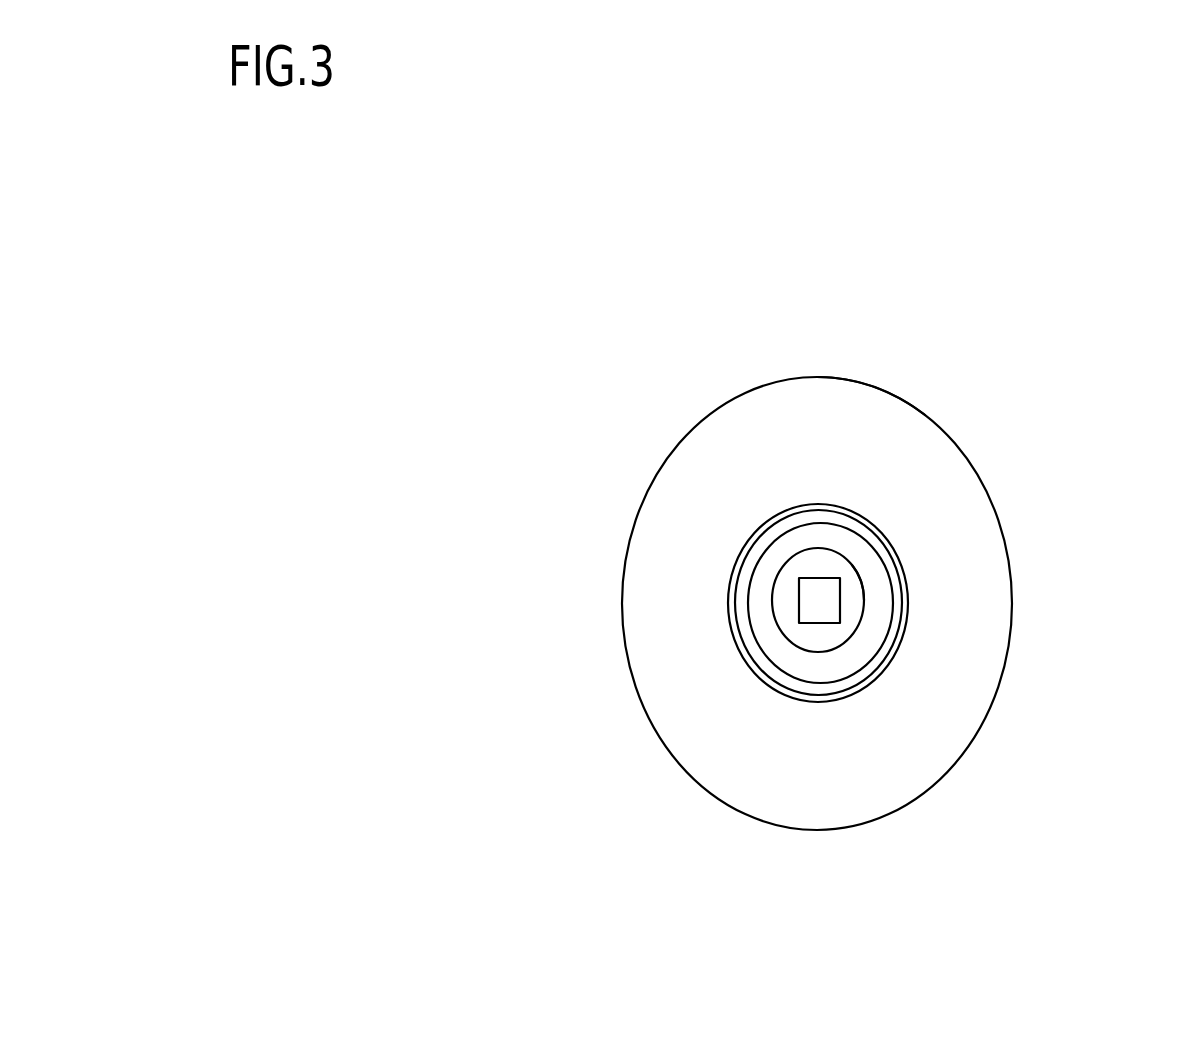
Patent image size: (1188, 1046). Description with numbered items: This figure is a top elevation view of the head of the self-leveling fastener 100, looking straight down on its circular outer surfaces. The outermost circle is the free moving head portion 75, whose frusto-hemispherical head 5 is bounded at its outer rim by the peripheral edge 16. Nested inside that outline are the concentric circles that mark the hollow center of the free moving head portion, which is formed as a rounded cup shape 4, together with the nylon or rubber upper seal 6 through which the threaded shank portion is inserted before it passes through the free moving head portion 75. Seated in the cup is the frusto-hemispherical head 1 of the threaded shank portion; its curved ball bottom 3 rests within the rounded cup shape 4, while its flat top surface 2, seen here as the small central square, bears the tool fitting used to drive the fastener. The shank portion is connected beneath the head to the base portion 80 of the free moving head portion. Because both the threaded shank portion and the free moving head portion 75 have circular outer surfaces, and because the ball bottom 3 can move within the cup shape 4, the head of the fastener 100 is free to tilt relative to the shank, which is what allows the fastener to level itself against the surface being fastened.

The fastener 100 is at (755, 268).
The frusto-hemispherical head 5 is at (700, 493).
The peripheral edge 16 is at (925, 415).
The free moving head portion 75 is at (813, 452).
The rounded cup shape 4 is at (740, 647).
The upper seal 6 is at (788, 693).
The curved ball bottom 3 is at (745, 598).
The frusto-hemispherical head 1 is at (868, 565).
The flat top surface 2 is at (842, 640).
The base portion 80 is at (820, 599).